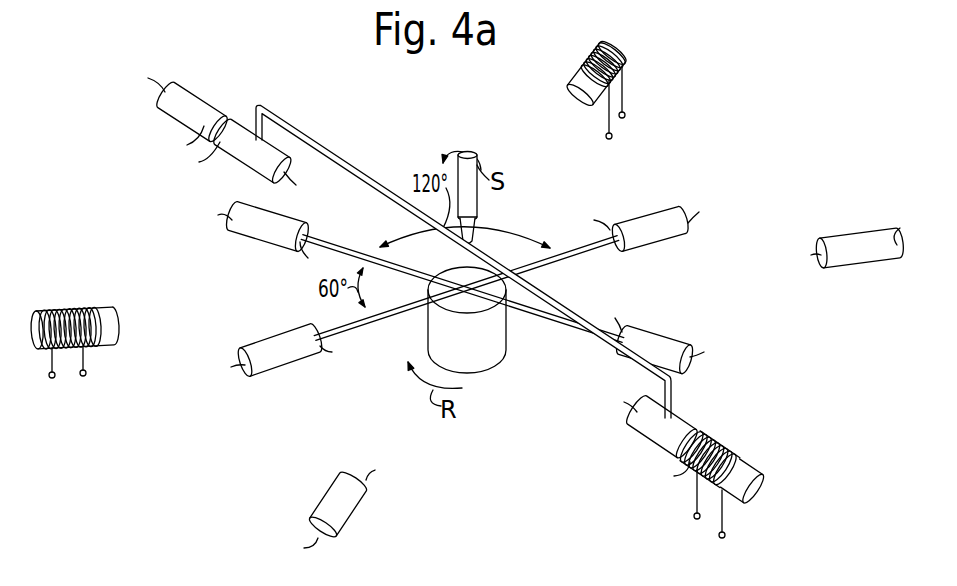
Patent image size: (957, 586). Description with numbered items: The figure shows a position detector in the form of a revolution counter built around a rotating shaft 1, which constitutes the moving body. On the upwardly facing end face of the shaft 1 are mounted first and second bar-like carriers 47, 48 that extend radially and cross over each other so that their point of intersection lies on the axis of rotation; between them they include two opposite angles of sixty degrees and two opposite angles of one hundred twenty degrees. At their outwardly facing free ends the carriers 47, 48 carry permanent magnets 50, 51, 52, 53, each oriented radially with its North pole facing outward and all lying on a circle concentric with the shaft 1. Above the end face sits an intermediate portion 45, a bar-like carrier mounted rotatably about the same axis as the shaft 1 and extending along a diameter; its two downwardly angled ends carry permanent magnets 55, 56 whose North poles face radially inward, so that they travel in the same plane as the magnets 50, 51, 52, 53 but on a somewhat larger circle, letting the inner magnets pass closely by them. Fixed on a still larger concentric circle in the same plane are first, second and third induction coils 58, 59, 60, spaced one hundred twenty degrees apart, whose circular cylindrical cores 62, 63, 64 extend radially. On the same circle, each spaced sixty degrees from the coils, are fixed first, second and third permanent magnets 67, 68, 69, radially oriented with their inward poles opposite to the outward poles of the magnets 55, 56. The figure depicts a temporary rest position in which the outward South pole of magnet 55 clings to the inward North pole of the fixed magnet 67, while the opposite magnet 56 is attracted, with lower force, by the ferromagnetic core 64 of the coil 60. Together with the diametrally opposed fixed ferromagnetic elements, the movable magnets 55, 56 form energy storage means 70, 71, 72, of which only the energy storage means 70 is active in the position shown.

The shaft 1 is at (495, 347).
The intermediate portion 45 is at (340, 158).
The first bar-like carrier 47 is at (360, 327).
The second bar-like carrier 48 is at (340, 215).
The permanent magnet 50 is at (293, 352).
The permanent magnet 51 is at (258, 225).
The permanent magnet 52 is at (660, 228).
The permanent magnet 53 is at (657, 342).
The permanent magnet 55 is at (238, 150).
The permanent magnet 56 is at (655, 425).
The first induction coil 58 is at (75, 306).
The second induction coil 59 is at (588, 44).
The third induction coil 60 is at (737, 452).
The core 62 is at (108, 336).
The core 63 is at (570, 88).
The core 64 is at (755, 483).
The first permanent magnet 67 is at (190, 100).
The second permanent magnet 68 is at (848, 250).
The third permanent magnet 69 is at (345, 505).
The energy storage means 70 is at (474, 286).
The energy storage means 71 is at (471, 271).
The energy storage means 72 is at (449, 287).